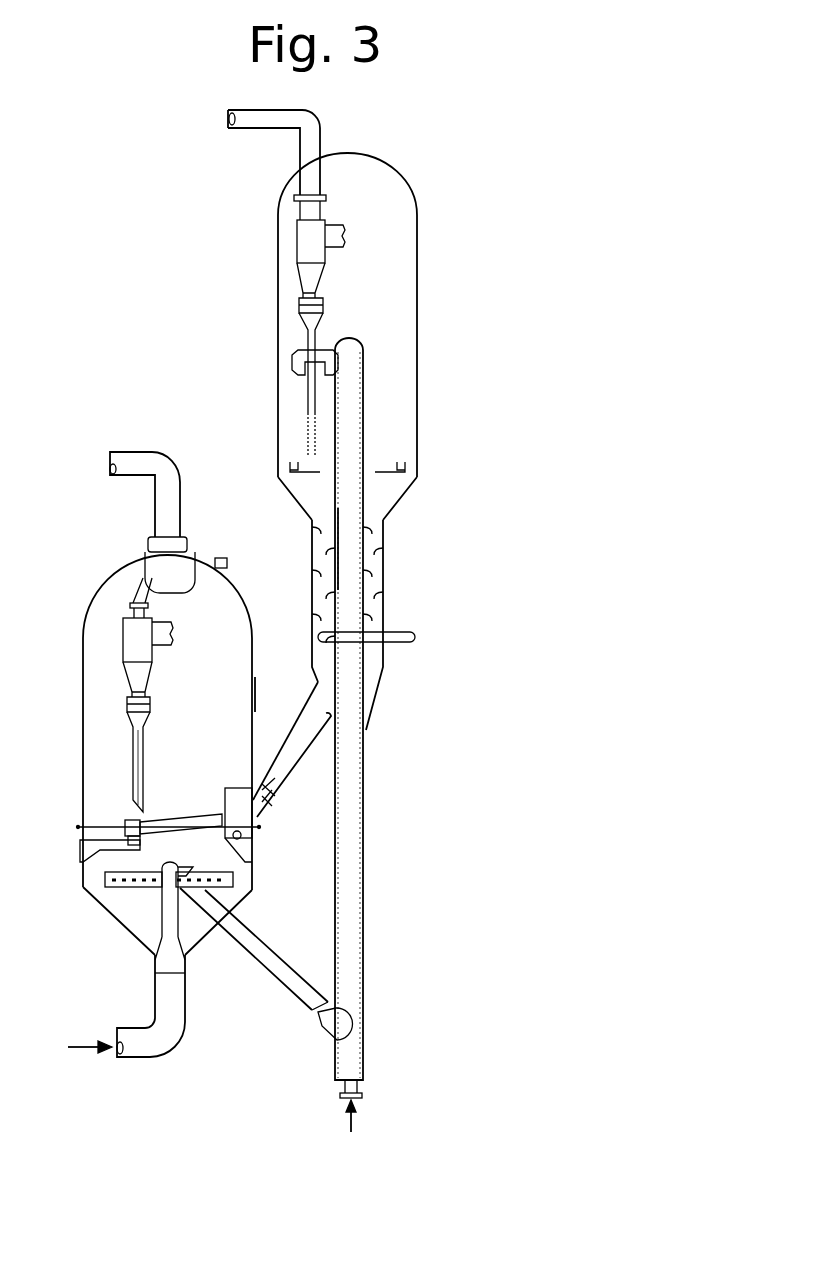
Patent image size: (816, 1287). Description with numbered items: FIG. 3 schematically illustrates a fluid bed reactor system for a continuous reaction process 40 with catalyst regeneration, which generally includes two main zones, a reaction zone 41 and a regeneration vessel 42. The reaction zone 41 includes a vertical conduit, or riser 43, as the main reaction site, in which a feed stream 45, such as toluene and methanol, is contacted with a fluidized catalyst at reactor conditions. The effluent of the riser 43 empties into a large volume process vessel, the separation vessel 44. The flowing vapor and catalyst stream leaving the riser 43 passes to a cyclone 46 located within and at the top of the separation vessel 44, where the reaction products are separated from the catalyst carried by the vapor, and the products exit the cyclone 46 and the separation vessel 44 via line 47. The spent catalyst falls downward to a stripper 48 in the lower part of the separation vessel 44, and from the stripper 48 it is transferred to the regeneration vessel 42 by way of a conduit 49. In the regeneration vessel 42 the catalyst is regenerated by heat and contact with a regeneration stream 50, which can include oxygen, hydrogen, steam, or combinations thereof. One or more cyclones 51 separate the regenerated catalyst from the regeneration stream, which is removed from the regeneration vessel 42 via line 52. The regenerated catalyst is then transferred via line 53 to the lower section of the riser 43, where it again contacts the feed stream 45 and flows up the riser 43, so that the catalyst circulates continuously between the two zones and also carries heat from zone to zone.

The reaction process 40 is at (603, 182).
The reaction zone 41 is at (425, 538).
The regeneration vessel 42 is at (85, 613).
The riser 43 is at (368, 782).
The separation vessel 44 is at (405, 355).
The feed stream 45 is at (358, 1121).
The cyclone 46 is at (298, 280).
The line 47 is at (298, 143).
The stripper 48 is at (387, 655).
The conduit 49 is at (297, 757).
The regeneration stream 50 is at (73, 1055).
The cyclones 51 is at (125, 677).
The line 52 is at (150, 503).
The line 53 is at (265, 978).